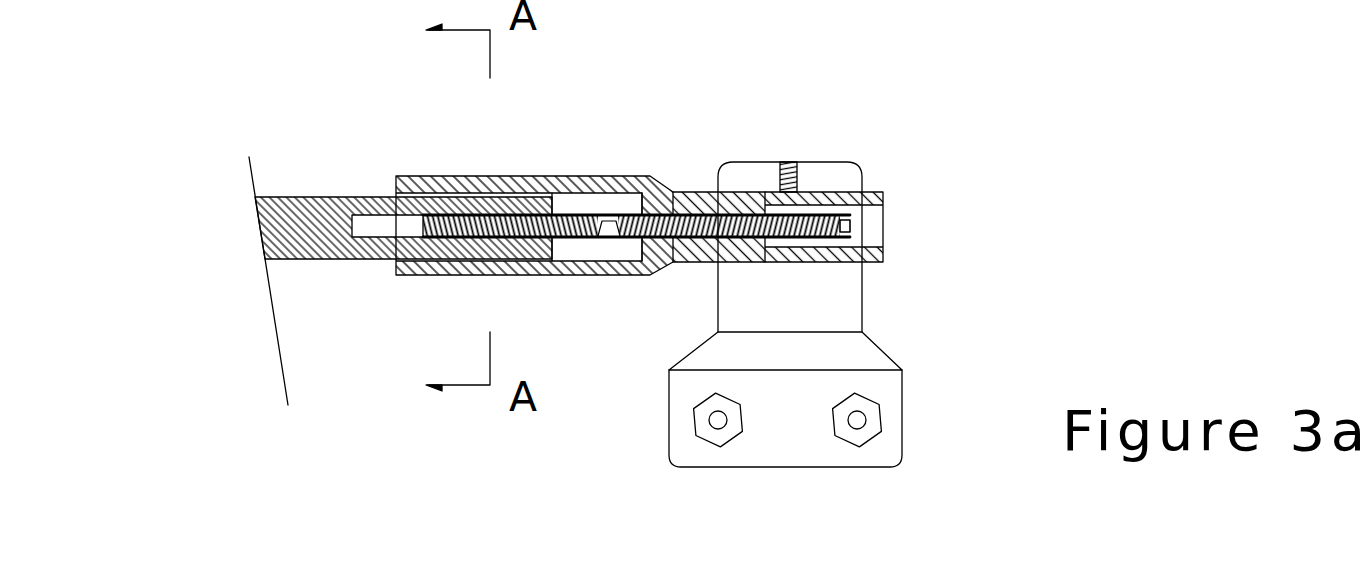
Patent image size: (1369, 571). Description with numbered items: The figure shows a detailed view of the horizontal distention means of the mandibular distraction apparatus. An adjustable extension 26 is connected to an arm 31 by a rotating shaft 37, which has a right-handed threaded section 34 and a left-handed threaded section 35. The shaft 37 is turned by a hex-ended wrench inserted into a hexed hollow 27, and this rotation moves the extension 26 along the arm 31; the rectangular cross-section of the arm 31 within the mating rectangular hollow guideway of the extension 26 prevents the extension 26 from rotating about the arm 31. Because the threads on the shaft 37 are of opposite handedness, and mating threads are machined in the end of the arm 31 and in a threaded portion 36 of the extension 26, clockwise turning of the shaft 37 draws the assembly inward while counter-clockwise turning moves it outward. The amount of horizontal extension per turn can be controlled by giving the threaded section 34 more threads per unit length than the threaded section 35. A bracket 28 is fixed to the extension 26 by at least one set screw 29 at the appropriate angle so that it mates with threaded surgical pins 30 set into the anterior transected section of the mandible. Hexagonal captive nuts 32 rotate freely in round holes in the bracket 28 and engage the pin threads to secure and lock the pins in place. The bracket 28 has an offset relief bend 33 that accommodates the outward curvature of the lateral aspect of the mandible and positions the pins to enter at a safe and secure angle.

The adjustable extension 26 is at (417, 275).
The hexed hollow 27 is at (852, 227).
The bracket 28 is at (860, 168).
The set screw 29 is at (788, 163).
The threaded surgical pins 30 is at (727, 418).
The arm 31 is at (348, 197).
The hexagonal captive nut 32 is at (737, 437).
The offset relief bend 33 is at (862, 333).
The right-handed threaded section 34 is at (565, 216).
The left-handed threaded section 35 is at (745, 213).
The threaded portion of extension 36 is at (673, 190).
The rotating shaft 37 is at (607, 260).